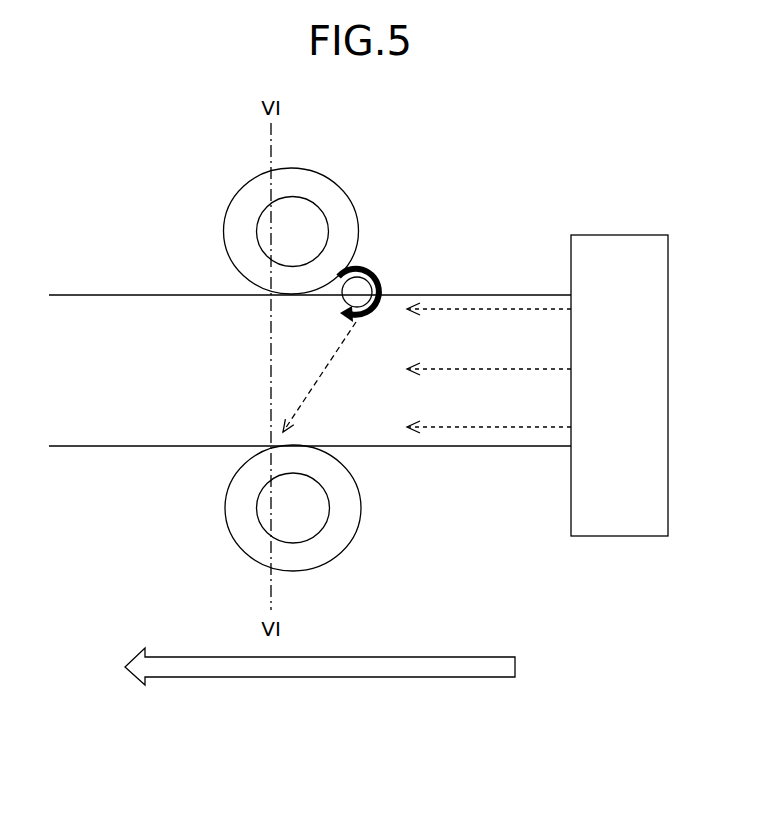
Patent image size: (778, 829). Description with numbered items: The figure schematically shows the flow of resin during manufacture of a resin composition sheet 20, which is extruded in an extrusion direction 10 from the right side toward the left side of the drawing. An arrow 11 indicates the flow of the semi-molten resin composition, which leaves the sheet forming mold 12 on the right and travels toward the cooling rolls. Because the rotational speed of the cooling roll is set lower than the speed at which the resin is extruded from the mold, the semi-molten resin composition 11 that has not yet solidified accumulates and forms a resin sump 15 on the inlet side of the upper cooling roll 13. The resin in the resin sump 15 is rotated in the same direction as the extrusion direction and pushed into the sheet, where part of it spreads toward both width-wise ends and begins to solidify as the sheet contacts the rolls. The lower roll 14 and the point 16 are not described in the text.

The extrusion direction 10 is at (320, 679).
The flow of semi-molten resin composition 11 is at (508, 430).
The sheet forming mold 12 is at (616, 247).
The upper cooling roll 13 is at (338, 207).
The lower roller 14 is at (313, 560).
The resin sump 15 is at (385, 284).
The nip / contact point 16 is at (270, 446).
The resin composition sheet 20 is at (143, 308).